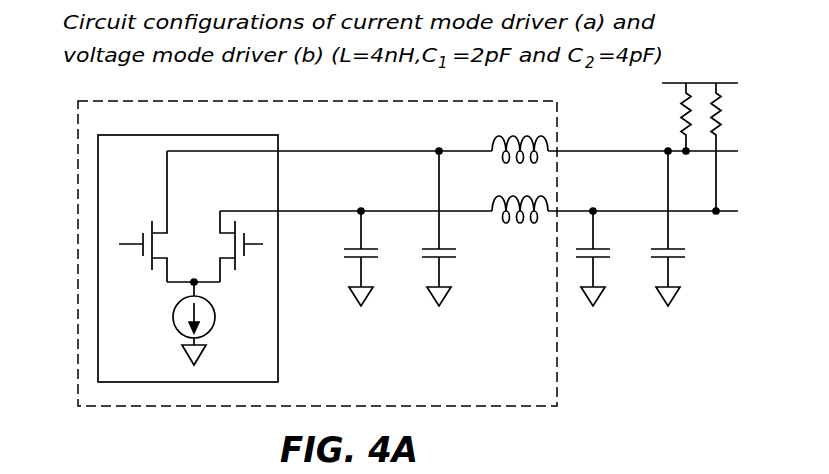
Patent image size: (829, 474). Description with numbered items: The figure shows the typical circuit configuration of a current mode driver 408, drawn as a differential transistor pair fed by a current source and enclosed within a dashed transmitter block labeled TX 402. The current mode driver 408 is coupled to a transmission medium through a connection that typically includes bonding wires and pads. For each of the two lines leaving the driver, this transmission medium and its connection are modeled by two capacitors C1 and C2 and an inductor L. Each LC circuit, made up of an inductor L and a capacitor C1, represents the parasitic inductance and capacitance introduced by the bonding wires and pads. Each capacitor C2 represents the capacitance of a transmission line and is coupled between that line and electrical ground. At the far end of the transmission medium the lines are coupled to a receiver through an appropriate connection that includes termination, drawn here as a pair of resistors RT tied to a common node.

The transmitter (TX) 402 is at (317, 253).
The current mode driver 408 is at (98, 233).
The inductor L is at (520, 166).
The capacitor C1 is at (337, 258).
The capacitor C2 is at (577, 228).
The termination resistor RT is at (700, 147).